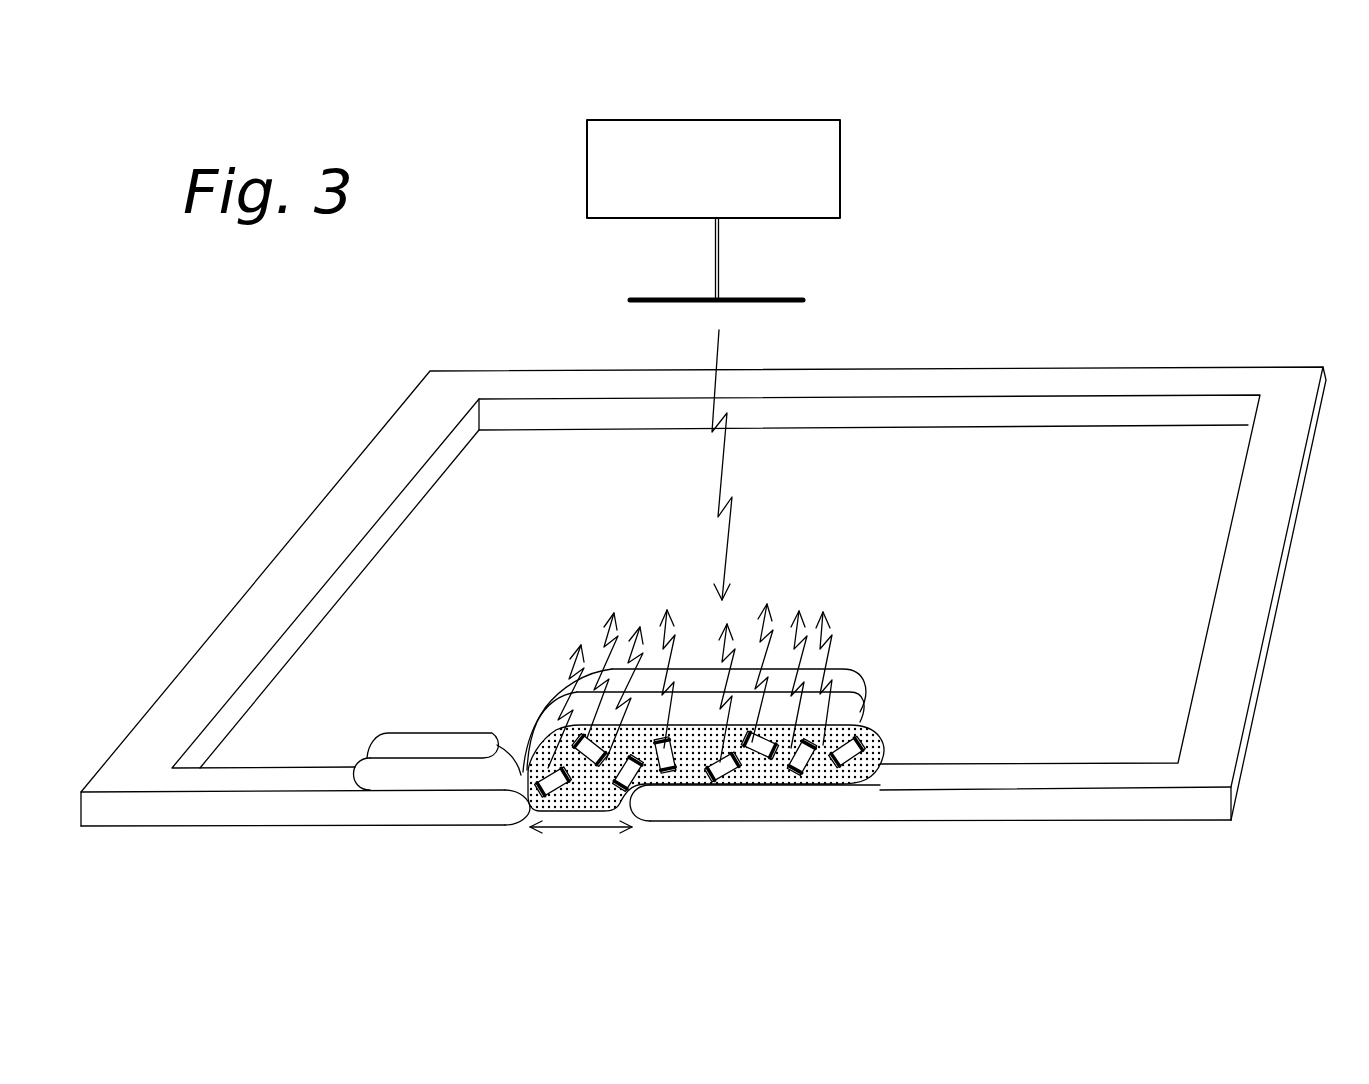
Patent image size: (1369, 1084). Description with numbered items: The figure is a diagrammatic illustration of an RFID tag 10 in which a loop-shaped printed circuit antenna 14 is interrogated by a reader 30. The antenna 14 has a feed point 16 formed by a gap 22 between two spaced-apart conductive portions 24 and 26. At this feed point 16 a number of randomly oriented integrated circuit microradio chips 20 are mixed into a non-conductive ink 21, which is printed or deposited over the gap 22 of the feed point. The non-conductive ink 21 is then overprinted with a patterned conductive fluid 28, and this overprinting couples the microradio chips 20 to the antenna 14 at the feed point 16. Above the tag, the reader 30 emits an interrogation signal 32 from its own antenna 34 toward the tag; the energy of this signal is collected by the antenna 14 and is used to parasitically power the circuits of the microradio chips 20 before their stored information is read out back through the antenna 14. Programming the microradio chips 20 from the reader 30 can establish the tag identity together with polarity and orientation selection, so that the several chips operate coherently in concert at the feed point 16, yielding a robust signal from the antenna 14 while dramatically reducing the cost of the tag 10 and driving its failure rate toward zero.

The RFID tag 10 is at (1050, 248).
The antenna 14 is at (1050, 385).
The feed point 16 is at (658, 862).
The integrated circuit microradio chips 20 is at (528, 775).
The non-conductive ink 21 is at (882, 715).
The gap 22 is at (575, 827).
The conductive portion 24 is at (913, 808).
The conductive portion 26 is at (427, 812).
The patterned conductive fluid 28 is at (432, 745).
The reader 30 is at (843, 162).
The interrogation signal 32 is at (728, 532).
The antenna 34 is at (650, 303).